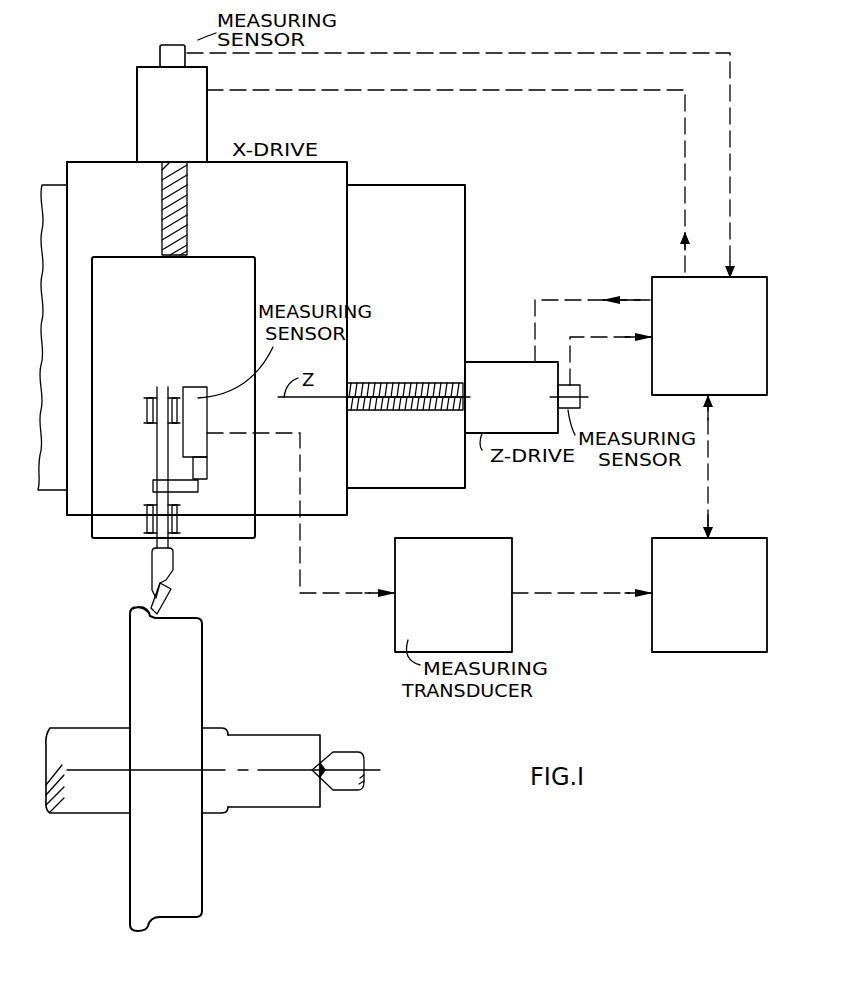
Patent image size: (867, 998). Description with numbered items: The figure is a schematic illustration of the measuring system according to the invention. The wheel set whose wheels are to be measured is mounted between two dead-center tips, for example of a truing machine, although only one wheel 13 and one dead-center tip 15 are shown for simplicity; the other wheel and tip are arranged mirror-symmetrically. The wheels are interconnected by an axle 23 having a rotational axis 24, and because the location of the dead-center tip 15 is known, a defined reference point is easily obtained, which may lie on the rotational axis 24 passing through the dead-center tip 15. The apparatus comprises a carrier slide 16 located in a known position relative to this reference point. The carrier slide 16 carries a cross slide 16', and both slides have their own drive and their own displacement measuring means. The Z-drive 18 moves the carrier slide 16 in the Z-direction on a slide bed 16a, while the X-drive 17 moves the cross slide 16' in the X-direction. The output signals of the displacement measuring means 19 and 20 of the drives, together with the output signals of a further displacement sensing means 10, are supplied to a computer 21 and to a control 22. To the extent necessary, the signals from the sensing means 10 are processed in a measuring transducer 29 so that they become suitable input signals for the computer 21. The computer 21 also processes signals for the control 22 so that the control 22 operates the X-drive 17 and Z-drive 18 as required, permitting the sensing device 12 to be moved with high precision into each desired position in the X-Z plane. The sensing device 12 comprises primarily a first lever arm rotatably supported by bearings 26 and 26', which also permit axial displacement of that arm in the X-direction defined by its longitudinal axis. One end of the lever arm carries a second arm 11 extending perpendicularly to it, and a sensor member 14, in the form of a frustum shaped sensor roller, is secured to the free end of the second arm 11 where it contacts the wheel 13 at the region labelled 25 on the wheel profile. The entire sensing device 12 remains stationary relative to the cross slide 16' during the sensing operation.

The displacement sensing means 10 is at (190, 397).
The second arm 11 is at (173, 560).
The sensing device 12 is at (84, 545).
The wheel 13 is at (193, 652).
The sensor member 14 is at (172, 598).
The dead-center tip 15 is at (353, 767).
The carrier slide 16 is at (224, 338).
The cross slide 16' is at (191, 383).
The slide bed 16a is at (453, 245).
The X-drive 17 is at (197, 112).
The Z-drive 18 is at (487, 370).
The displacement measuring means 19 is at (176, 52).
The displacement measuring means 20 is at (585, 399).
The computer 21 is at (713, 622).
The control 22 is at (707, 383).
The axle 23 is at (97, 802).
The rotational axis 24 is at (277, 772).
The wheel profile edge 25 is at (138, 605).
The bearing 26 is at (178, 519).
The bearing 26' is at (151, 389).
The measuring transducer 29 is at (456, 630).